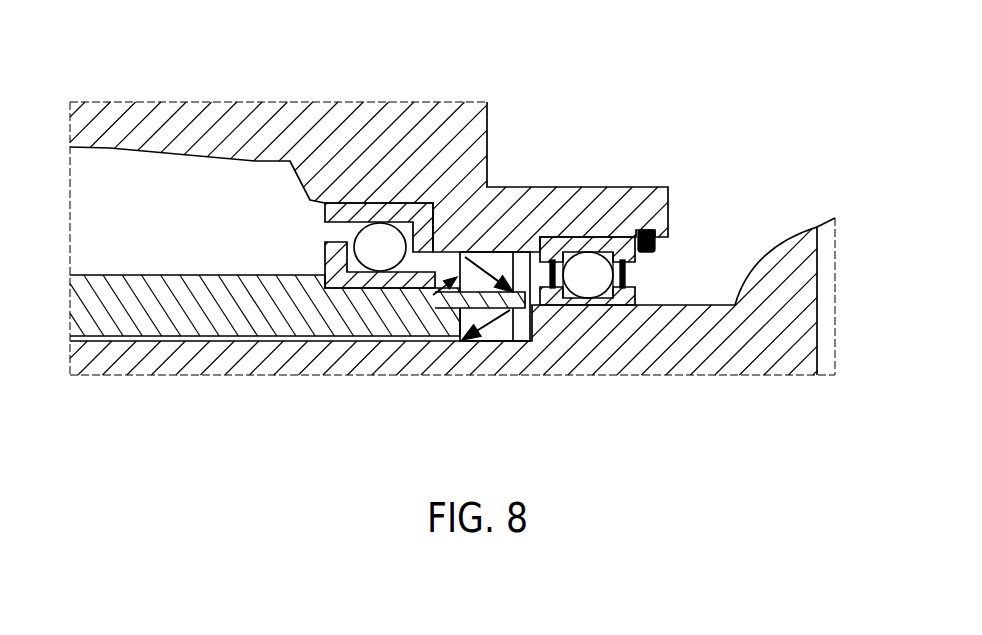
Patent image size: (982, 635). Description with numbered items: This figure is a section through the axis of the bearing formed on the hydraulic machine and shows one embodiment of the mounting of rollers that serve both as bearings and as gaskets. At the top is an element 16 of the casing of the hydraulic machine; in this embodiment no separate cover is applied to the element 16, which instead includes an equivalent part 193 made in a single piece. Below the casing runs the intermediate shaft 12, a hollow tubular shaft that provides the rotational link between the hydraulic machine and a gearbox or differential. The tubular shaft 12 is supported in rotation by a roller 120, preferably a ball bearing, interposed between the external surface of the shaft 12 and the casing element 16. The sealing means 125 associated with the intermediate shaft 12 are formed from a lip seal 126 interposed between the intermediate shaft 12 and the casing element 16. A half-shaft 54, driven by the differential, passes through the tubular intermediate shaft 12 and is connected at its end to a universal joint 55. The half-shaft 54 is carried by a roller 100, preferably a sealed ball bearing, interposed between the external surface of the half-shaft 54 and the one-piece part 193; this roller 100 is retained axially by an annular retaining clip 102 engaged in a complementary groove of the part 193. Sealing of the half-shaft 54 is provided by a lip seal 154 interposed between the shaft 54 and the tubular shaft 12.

The casing element 16 is at (184, 122).
The intermediate shaft 12 is at (160, 290).
The equivalent one-piece part 193 is at (600, 205).
The annular retaining clip 102 is at (657, 245).
The roller 120 is at (337, 265).
The sealing means 125 is at (440, 285).
The lip seal 126 is at (470, 282).
The lip seal 154 is at (502, 337).
The roller 100 is at (590, 338).
The half-shaft 54 is at (697, 362).
The universal joint 55 is at (828, 365).